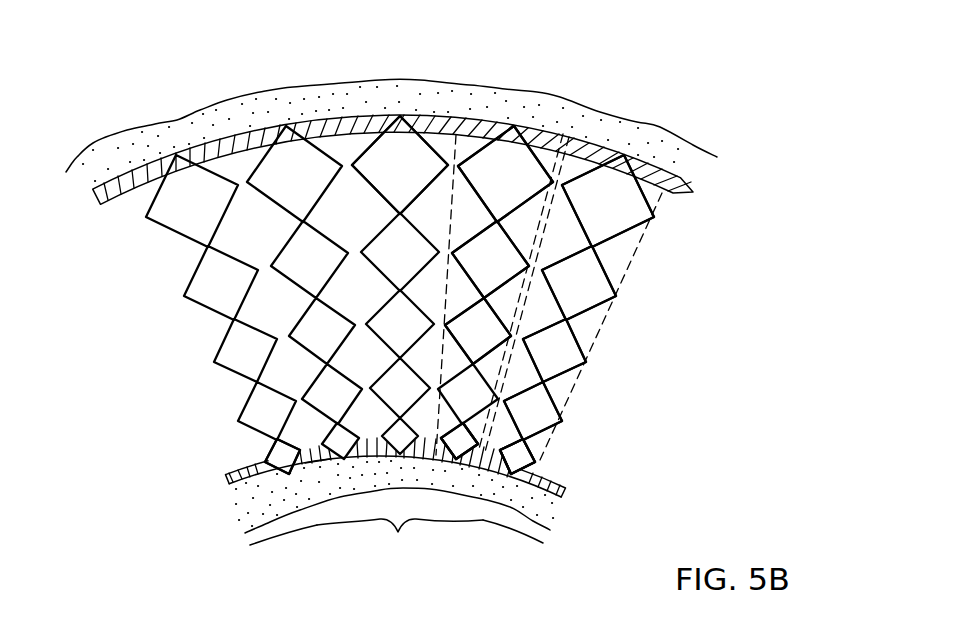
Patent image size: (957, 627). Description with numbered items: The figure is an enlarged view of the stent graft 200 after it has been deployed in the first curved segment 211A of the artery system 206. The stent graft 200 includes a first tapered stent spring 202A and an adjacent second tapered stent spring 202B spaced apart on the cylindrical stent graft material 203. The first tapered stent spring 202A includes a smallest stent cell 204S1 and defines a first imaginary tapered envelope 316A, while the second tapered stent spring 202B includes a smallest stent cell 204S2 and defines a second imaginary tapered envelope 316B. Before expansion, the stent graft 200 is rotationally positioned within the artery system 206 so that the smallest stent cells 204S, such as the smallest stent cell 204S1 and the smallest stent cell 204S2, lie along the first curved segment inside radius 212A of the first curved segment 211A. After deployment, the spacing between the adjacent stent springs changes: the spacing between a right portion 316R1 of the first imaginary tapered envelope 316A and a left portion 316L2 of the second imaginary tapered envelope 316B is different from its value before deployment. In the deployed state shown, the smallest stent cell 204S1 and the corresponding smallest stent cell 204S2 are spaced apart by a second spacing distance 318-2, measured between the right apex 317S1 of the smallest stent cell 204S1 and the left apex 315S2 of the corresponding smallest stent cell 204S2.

The stent graft 200 is at (168, 335).
The first tapered stent spring 202A is at (462, 137).
The second tapered stent spring 202B is at (587, 150).
The cylindrical stent graft material 203 is at (96, 193).
The smallest stent cells 204S is at (297, 432).
The smallest stent cell of first tapered stent spring 204S1 is at (460, 430).
The smallest stent cell of second tapered stent spring 204S2 is at (520, 447).
The artery system 206 is at (157, 130).
The first curved segment 211A is at (400, 541).
The first curved segment inside radius 212A is at (318, 456).
The left apex 315S2 is at (510, 447).
The first imaginary tapered envelope 316A is at (440, 212).
The second imaginary tapered envelope 316B is at (650, 273).
The right portion of imaginary tapered envelope 316R1 is at (528, 287).
The left portion of imaginary tapered envelope 316L2 is at (503, 326).
The right apex 317S1 is at (451, 462).
The second spacing distance 318-2 is at (483, 455).